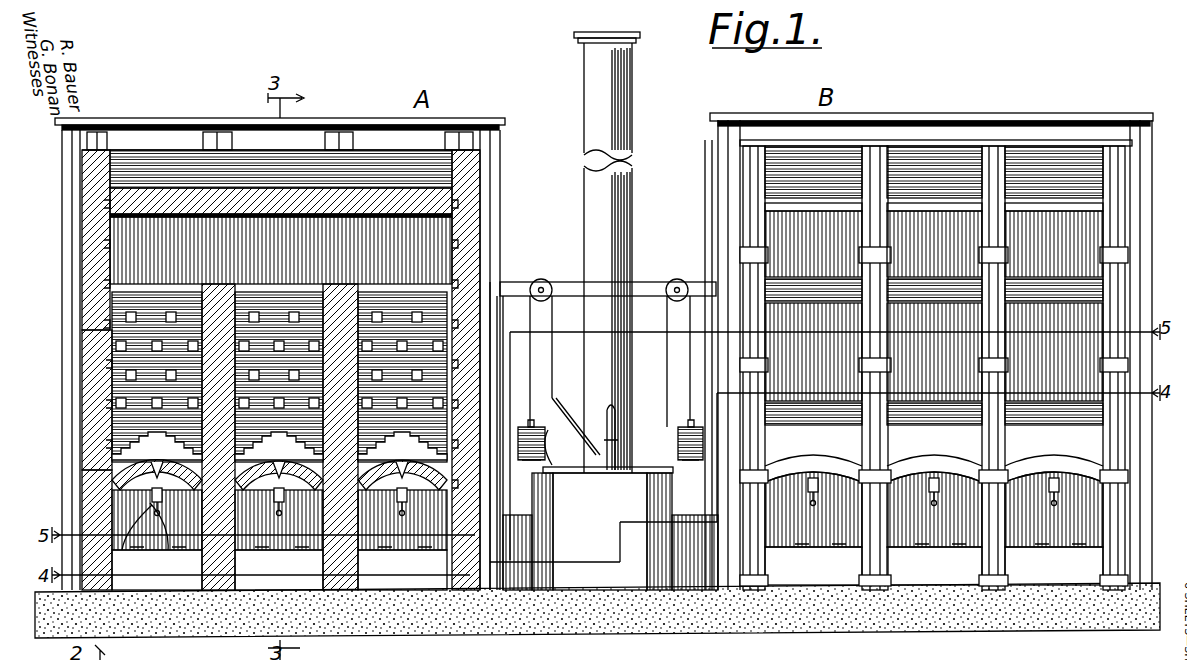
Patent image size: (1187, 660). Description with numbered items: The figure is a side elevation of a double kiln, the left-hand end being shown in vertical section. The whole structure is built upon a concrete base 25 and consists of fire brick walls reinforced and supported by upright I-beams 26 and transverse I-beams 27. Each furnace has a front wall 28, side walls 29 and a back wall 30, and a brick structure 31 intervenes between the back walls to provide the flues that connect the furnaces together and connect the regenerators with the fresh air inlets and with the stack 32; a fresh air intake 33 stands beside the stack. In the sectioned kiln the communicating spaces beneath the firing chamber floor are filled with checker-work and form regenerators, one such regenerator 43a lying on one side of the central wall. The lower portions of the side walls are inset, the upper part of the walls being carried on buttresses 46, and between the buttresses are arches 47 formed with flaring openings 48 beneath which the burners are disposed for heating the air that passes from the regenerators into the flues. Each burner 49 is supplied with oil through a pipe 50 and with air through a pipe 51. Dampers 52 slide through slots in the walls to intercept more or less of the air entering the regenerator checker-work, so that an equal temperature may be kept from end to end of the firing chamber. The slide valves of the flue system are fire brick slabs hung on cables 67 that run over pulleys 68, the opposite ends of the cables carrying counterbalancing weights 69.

The concrete base 25 is at (668, 618).
The upright I-beams 26 is at (82, 422).
The transverse I-beams 27 is at (902, 126).
The front wall 28 is at (82, 345).
The side walls 29 is at (1040, 235).
The back walls 30 is at (480, 212).
The brick structure 31 is at (570, 515).
The stack 32 is at (600, 216).
The fresh air intake 33 is at (384, 378).
The regenerator spaces 43a is at (160, 442).
The buttresses 46 is at (268, 496).
The arches 47 is at (165, 494).
The flaring openings 48 is at (110, 492).
The burner 49 is at (157, 475).
The oil pipe 50 is at (171, 536).
The air pipe 51 is at (135, 537).
The dampers 52 is at (296, 550).
The cables 67 is at (556, 378).
The pulleys 68 is at (547, 282).
The counterbalancing weights 69 is at (617, 420).